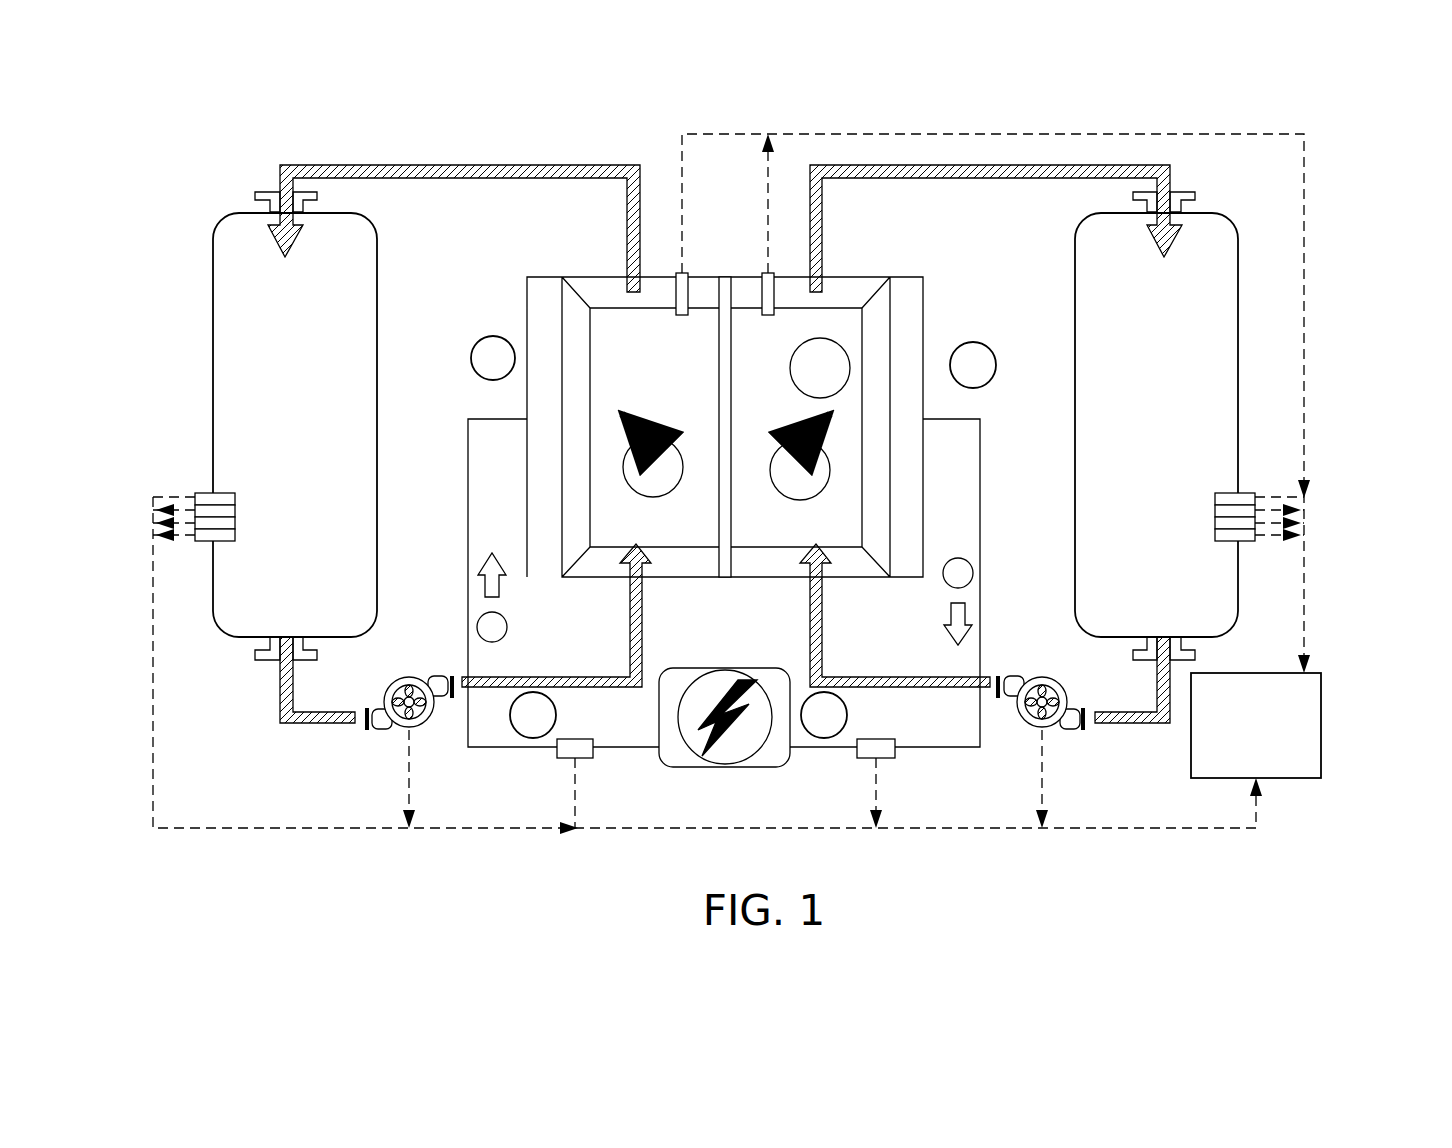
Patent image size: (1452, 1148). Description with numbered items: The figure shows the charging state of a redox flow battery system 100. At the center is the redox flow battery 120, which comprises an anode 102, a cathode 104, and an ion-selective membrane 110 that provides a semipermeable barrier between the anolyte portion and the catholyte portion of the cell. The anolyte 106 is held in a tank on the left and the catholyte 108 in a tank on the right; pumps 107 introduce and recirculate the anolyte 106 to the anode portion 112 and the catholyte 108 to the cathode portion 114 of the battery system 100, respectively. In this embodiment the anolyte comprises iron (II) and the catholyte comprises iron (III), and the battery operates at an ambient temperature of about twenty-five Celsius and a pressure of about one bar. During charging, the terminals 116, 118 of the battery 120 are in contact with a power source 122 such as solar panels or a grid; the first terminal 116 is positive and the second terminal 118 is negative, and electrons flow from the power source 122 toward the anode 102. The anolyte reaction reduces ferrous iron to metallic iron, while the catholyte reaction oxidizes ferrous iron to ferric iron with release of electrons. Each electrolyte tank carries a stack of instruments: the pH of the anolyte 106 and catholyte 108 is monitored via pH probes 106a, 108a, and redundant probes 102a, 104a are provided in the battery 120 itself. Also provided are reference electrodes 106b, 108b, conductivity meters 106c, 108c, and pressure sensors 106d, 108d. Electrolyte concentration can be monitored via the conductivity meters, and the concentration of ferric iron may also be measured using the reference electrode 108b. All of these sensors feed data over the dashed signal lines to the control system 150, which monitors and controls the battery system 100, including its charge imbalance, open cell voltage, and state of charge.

The redox flow battery system 100 is at (466, 132).
The anode 102 is at (540, 290).
The redundant probe 102a is at (672, 272).
The cathode 104 is at (910, 325).
The redundant probe 104a is at (770, 272).
The anolyte 106 is at (213, 268).
The pH probe 106a is at (218, 497).
The reference electrode 106b is at (208, 510).
The conductivity meter 106c is at (203, 523).
The pressure sensor 106d is at (198, 532).
The pump 107 is at (409, 677).
The catholyte 108 is at (1213, 212).
The pH probe 108a is at (1235, 497).
The reference electrode 108b is at (1245, 510).
The conductivity meter 108c is at (1250, 523).
The pressure sensor 108d is at (1255, 532).
The ion-selective membrane 110 is at (727, 275).
The anode portion 112 is at (608, 322).
The cathode portion 114 is at (848, 292).
The first terminal 116 is at (548, 768).
The second terminal 118 is at (903, 767).
The redox flow battery 120 is at (482, 332).
The power source 122 is at (712, 664).
The control system 150 is at (1266, 672).